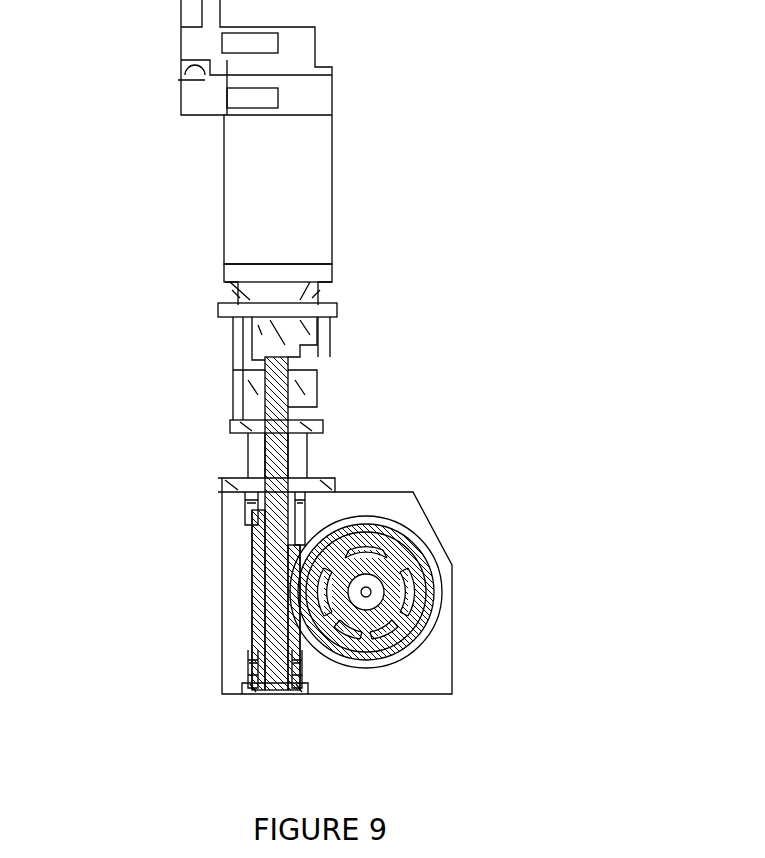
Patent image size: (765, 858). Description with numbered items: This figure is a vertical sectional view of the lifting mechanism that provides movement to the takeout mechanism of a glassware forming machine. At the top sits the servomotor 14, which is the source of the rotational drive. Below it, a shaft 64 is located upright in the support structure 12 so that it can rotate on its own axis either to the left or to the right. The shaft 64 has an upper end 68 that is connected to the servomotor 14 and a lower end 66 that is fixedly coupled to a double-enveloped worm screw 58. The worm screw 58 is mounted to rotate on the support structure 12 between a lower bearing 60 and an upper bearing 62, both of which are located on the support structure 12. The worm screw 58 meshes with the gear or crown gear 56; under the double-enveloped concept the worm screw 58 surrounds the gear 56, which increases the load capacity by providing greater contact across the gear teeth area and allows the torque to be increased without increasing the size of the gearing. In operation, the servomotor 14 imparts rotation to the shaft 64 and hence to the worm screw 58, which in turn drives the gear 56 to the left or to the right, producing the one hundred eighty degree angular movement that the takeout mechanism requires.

The servomotor 14 is at (276, 195).
The upper end 68 is at (283, 355).
The support structure 12 is at (398, 502).
The gear or crown gear 56 is at (398, 575).
The shaft 64 is at (275, 443).
The upper bearing 62 is at (252, 513).
The double-enveloped worm screw 58 is at (272, 598).
The lower bearing 60 is at (252, 666).
The lower end 66 is at (307, 690).